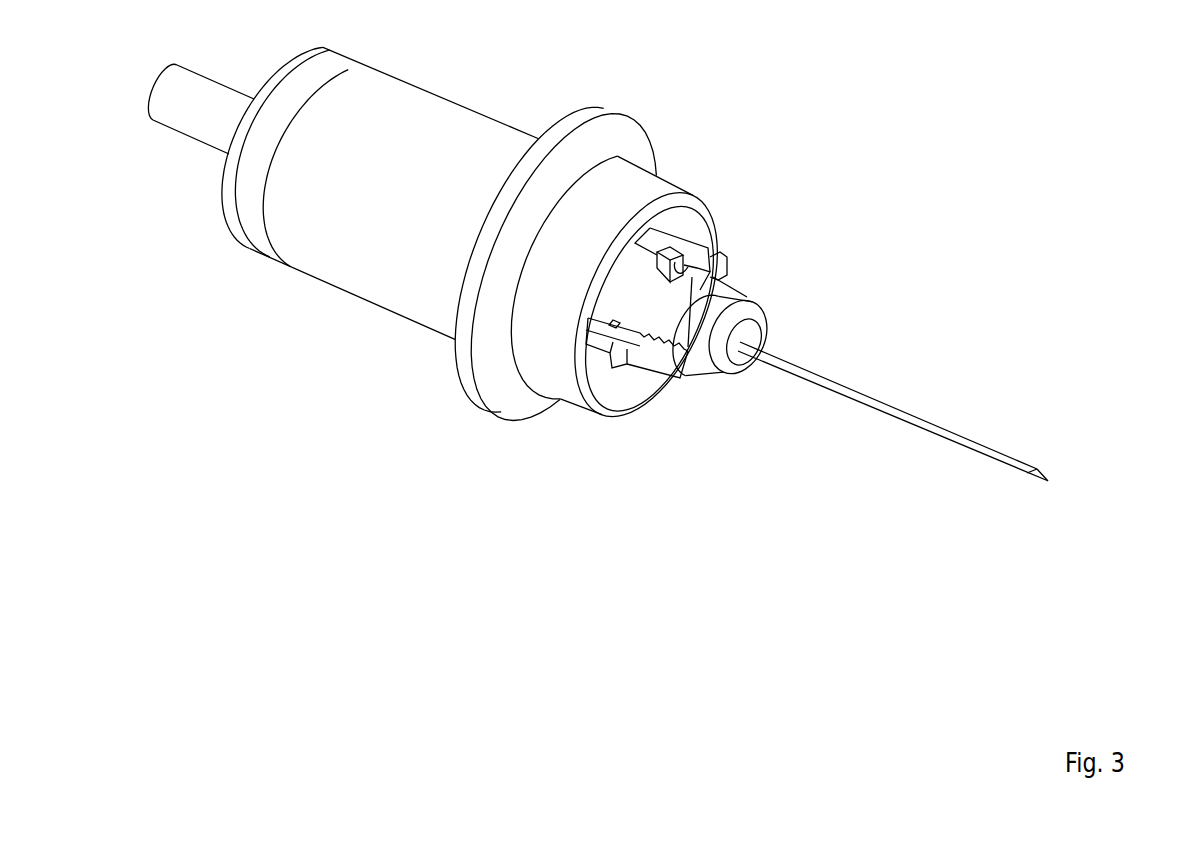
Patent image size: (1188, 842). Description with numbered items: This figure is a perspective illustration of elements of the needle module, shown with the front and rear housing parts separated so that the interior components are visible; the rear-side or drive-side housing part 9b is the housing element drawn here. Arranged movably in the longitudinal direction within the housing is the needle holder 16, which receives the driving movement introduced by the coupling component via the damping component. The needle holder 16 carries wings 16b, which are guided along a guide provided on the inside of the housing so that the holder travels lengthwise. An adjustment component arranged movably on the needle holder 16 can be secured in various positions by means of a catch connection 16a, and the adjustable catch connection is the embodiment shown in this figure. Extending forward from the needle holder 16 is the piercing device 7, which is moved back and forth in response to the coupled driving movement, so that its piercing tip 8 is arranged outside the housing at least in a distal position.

The rear-side housing part 9b is at (298, 243).
The needle holder 16 is at (748, 312).
The catch connection 16a is at (648, 338).
The wings 16b is at (708, 260).
The piercing device 7 is at (960, 445).
The piercing tip 8 is at (1038, 470).